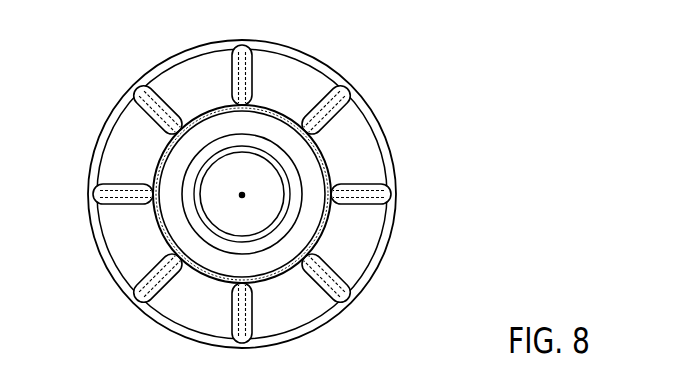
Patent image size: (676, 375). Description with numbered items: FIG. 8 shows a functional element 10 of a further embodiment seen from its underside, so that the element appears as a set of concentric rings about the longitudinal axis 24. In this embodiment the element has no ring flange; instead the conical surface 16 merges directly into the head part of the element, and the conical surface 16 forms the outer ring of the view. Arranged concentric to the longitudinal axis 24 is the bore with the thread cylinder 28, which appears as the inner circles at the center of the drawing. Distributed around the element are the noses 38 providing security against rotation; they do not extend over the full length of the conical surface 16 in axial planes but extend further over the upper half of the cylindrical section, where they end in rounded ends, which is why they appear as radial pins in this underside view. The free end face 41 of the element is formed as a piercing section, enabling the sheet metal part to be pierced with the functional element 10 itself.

The functional element 10 is at (405, 133).
The conical surface 16 is at (353, 132).
The longitudinal axis 24 is at (244, 192).
The thread cylinder 28 is at (273, 225).
The noses 38 is at (238, 75).
The free end face 41 is at (262, 262).